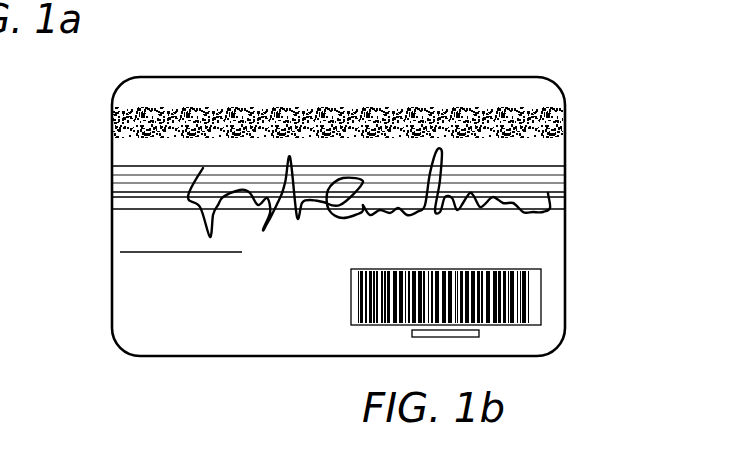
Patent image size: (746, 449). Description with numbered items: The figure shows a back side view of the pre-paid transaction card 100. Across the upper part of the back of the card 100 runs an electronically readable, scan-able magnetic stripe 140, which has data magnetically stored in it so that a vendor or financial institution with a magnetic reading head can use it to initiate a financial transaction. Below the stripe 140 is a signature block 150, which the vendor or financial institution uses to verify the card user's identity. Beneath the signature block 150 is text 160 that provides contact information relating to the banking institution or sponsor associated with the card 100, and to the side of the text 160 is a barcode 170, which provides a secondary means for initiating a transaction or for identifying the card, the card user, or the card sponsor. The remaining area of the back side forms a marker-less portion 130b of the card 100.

The card 100 is at (477, 45).
The marker-less portion 130b is at (258, 340).
The magnetic stripe 140 is at (565, 128).
The signature block 150 is at (112, 193).
The text 160 is at (115, 290).
The barcode 170 is at (541, 296).